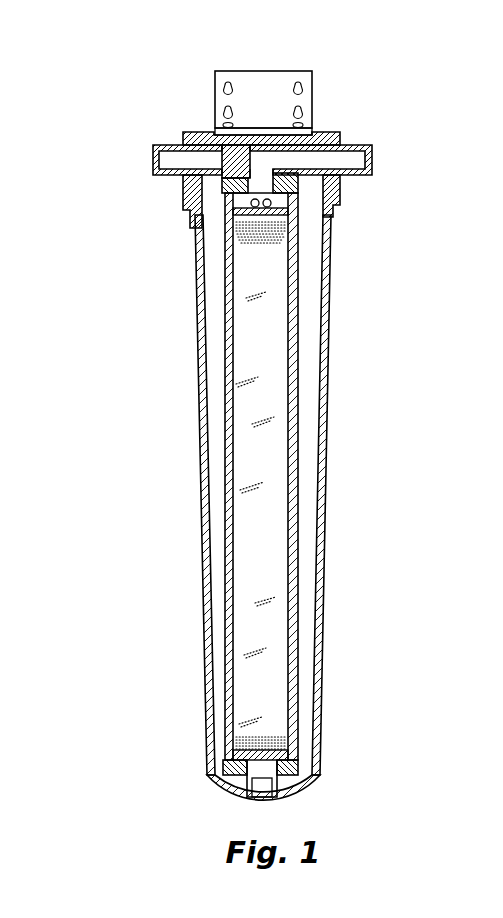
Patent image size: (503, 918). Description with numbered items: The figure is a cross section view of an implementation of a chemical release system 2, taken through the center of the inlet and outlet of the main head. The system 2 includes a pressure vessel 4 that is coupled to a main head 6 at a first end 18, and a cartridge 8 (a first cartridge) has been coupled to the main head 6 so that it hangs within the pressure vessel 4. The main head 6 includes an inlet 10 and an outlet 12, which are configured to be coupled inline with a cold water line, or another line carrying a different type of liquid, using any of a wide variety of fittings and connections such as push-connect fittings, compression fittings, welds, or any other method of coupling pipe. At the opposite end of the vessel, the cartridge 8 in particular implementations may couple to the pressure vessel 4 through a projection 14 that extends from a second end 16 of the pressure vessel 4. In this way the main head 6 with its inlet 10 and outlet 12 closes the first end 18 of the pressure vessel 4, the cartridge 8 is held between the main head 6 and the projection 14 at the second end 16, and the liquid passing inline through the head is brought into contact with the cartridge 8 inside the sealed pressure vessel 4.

The chemical release system 2 is at (133, 117).
The pressure vessel 4 is at (202, 428).
The main head 6 is at (337, 140).
The cartridge 8 is at (283, 388).
The inlet 10 is at (158, 163).
The outlet 12 is at (360, 162).
The projection 14 is at (248, 785).
The second end 16 is at (312, 780).
The first end 18 is at (337, 203).